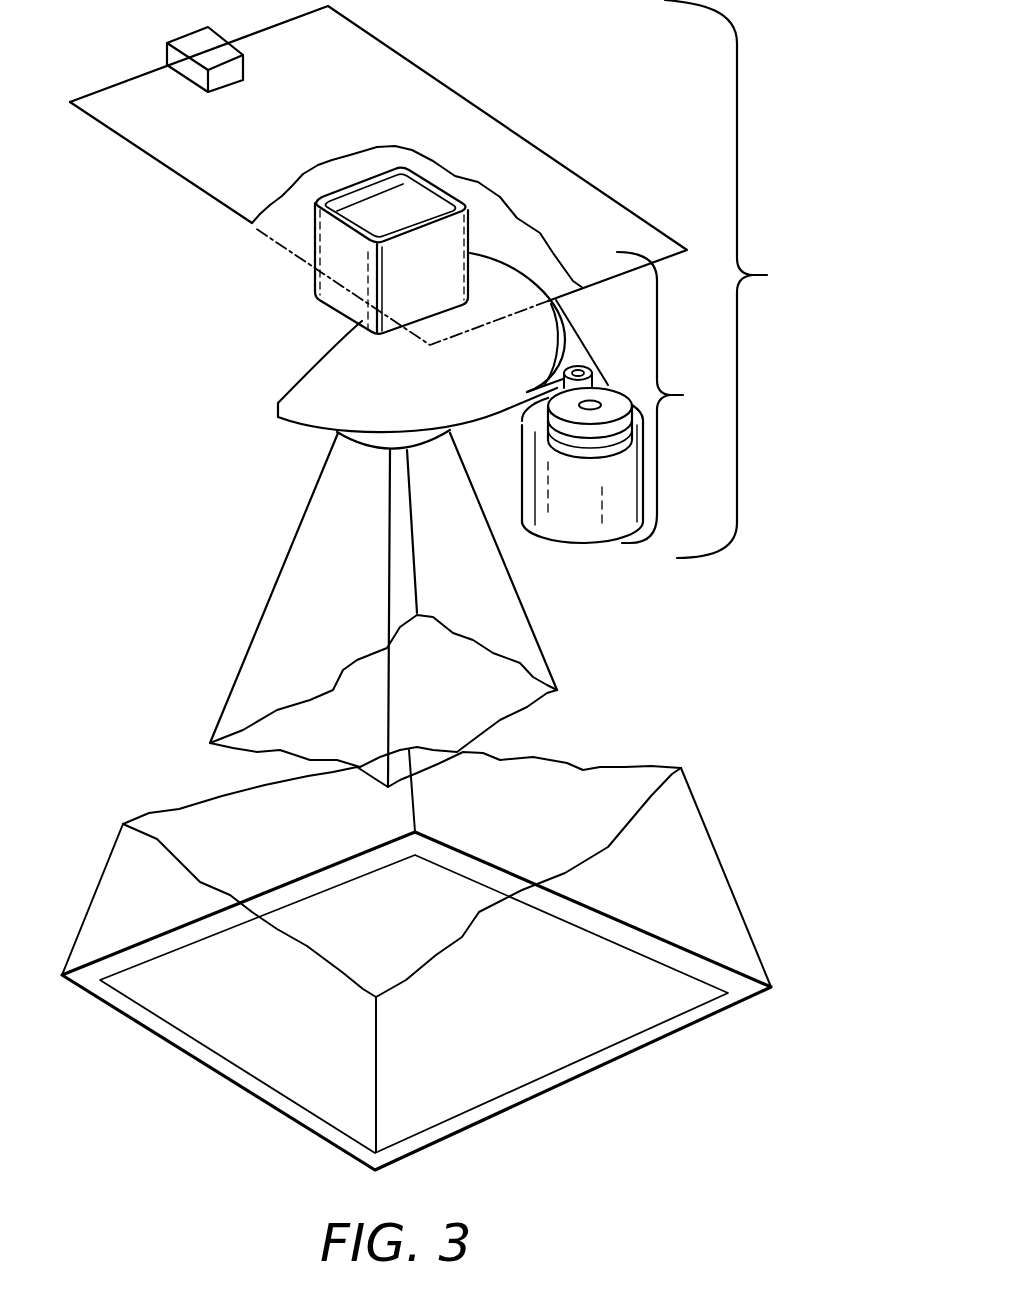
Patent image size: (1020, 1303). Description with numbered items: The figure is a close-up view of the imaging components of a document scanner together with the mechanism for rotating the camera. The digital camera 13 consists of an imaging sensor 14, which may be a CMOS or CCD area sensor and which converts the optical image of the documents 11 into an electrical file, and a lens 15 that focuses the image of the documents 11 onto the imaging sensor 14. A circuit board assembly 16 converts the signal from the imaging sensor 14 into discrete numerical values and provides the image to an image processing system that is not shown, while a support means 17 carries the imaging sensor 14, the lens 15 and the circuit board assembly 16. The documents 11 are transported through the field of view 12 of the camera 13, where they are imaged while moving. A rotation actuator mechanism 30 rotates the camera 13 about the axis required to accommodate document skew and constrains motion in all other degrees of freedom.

The documents 11 is at (659, 1025).
The field of view 12 is at (552, 668).
The digital camera 13 is at (737, 279).
The imaging sensor 14 is at (358, 200).
The lens 15 is at (370, 450).
The circuit board assembly 16 is at (423, 100).
The support means 17 is at (332, 250).
The rotation actuator mechanism 30 is at (621, 397).